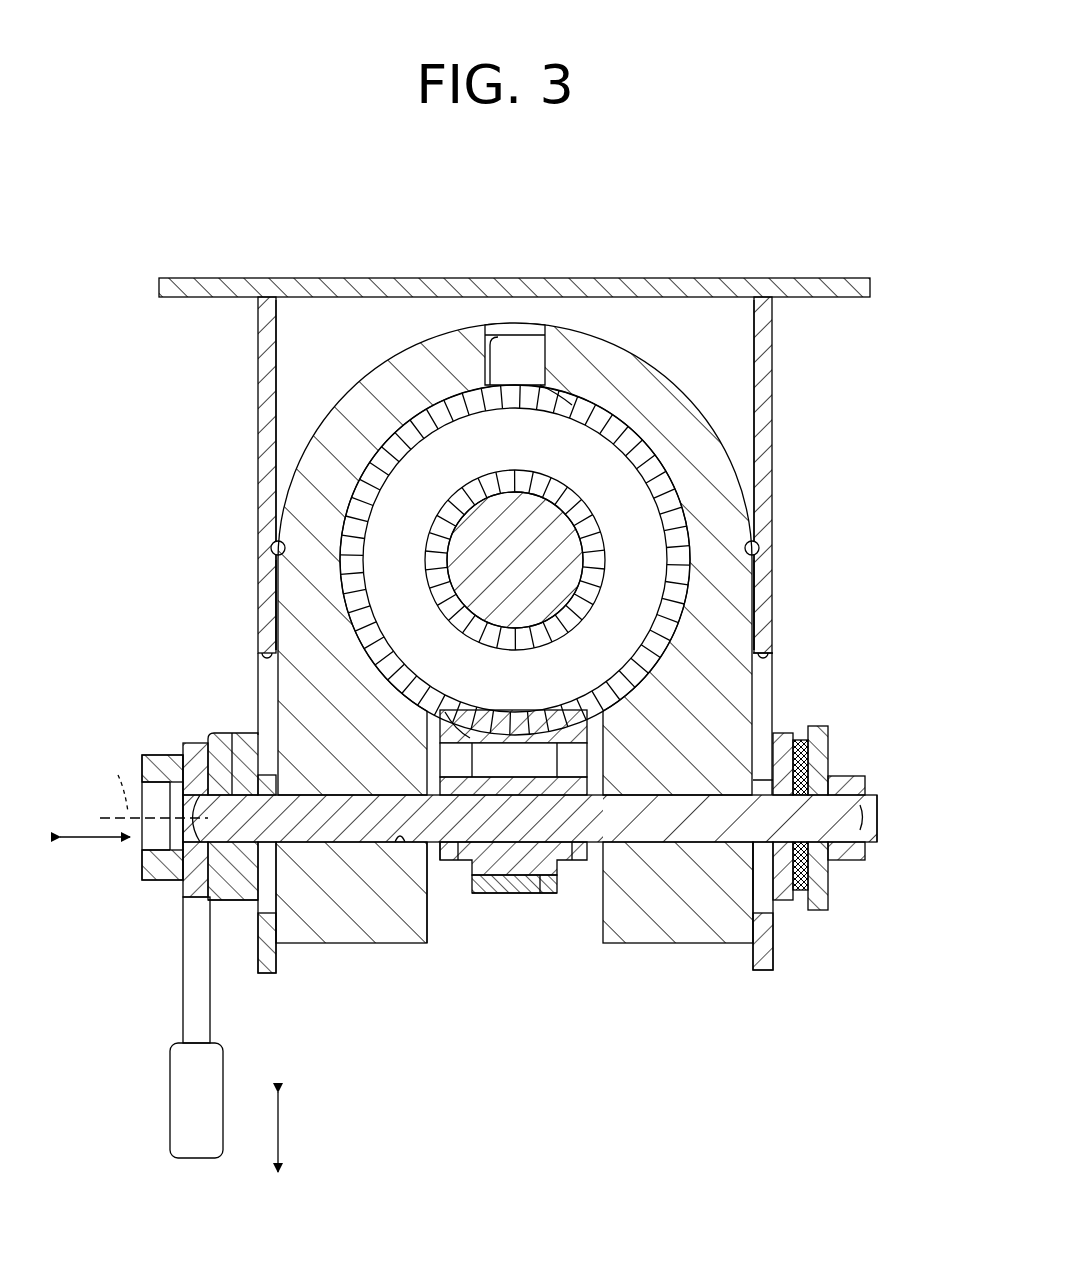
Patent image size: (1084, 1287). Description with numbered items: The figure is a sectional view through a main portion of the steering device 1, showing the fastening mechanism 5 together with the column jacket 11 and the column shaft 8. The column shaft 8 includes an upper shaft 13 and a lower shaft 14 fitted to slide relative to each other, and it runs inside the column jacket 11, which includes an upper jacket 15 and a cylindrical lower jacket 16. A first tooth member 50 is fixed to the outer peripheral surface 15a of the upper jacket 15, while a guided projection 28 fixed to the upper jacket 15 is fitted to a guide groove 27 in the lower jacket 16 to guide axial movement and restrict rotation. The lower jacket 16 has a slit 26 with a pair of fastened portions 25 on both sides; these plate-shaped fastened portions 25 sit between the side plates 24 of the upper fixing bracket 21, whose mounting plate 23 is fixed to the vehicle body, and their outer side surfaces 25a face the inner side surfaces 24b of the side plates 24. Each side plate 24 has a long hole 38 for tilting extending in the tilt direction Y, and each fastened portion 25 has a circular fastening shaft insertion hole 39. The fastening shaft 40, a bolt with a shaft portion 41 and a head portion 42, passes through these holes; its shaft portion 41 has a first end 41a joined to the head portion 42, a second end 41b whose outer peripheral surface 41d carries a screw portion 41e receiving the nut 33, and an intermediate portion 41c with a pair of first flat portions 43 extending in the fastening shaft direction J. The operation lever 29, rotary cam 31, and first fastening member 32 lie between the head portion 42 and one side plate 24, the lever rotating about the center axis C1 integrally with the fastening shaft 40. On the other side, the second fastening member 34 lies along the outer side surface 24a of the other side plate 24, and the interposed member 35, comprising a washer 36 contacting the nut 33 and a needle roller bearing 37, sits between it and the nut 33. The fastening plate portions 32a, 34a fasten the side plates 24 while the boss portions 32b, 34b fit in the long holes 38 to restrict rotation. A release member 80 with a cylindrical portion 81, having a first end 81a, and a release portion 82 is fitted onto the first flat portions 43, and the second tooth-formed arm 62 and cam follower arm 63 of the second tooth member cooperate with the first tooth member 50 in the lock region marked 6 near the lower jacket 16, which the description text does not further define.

The steering device 1 is at (796, 246).
The fastening mechanism 5 is at (178, 905).
The gap 6 is at (462, 732).
The column shaft 8 is at (378, 548).
The column jacket 11 is at (515, 496).
The upper shaft 13 is at (450, 490).
The lower shaft 14 is at (472, 548).
The upper jacket 15 is at (662, 452).
The outer peripheral surface of upper jacket 15a is at (572, 405).
The lower jacket 16 is at (650, 355).
The upper fixing bracket 21 is at (512, 510).
The mounting plate 23 is at (375, 282).
The side plates 24 is at (264, 348).
The outer side surface of side plate 24a is at (258, 402).
The inner side surfaces of side plates 24b is at (272, 548).
The fastened portions 25 is at (313, 920).
The outer side surfaces of fastened portions 25a is at (268, 585).
The slit 26 is at (432, 905).
The guide groove 27 is at (500, 362).
The guided projection 28 is at (518, 368).
The operation lever 29 is at (178, 1105).
The rotary cam 31 is at (195, 743).
The first fastening member 32 is at (238, 742).
The fastening plate portion 32a is at (265, 925).
The boss portion 32b is at (250, 890).
The nut 33 is at (845, 780).
The second fastening member 34 is at (783, 742).
The fastening plate portion 34a is at (760, 925).
The boss portion 34b is at (740, 862).
The interposed member 35 is at (826, 868).
The washer 36 is at (825, 908).
The needle roller bearing 37 is at (800, 892).
The long hole for tilting 38 is at (262, 657).
The fastening shaft insertion hole 39 is at (360, 880).
The fastening shaft 40 is at (152, 752).
The shaft portion 41 is at (690, 848).
The first end 41a is at (178, 848).
The second end 41b is at (858, 835).
The intermediate portion 41c is at (440, 857).
The outer peripheral surface 41d is at (398, 848).
The screw portion 41e is at (871, 790).
The head portion 42 is at (160, 876).
The first flat portions 43 is at (560, 785).
The first tooth member 50 is at (490, 720).
The second tooth-formed arm 62 is at (527, 752).
The cam follower arm 63 is at (517, 895).
The release member 80 is at (498, 893).
The cylindrical portion 81 is at (466, 862).
The first end 81a is at (575, 857).
The release portion 82 is at (540, 893).
The center axis C1 is at (109, 778).
The fastening shaft direction J is at (95, 834).
The tilt direction Y is at (282, 1128).